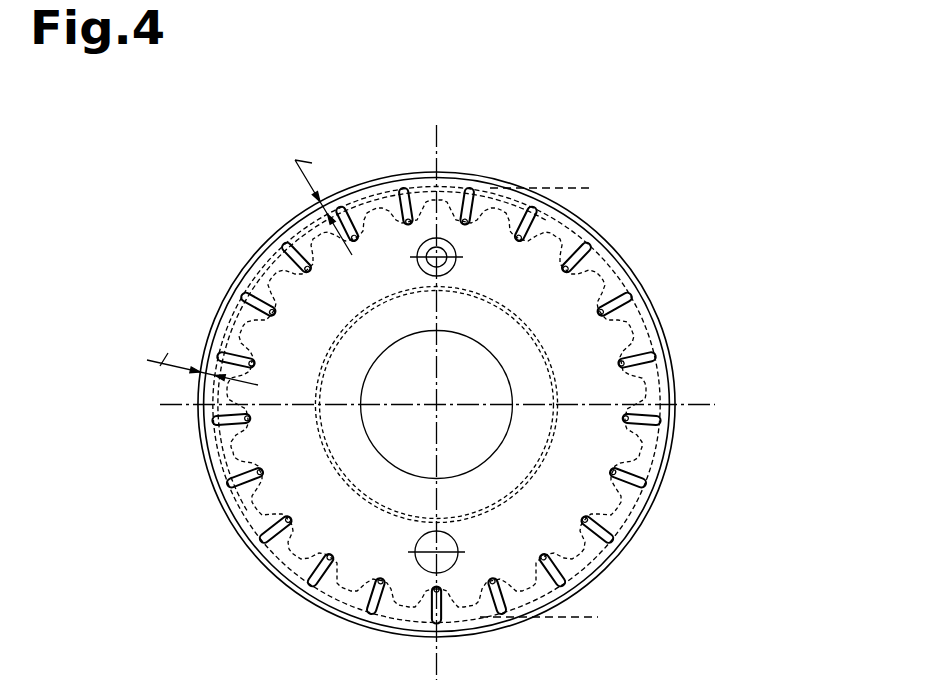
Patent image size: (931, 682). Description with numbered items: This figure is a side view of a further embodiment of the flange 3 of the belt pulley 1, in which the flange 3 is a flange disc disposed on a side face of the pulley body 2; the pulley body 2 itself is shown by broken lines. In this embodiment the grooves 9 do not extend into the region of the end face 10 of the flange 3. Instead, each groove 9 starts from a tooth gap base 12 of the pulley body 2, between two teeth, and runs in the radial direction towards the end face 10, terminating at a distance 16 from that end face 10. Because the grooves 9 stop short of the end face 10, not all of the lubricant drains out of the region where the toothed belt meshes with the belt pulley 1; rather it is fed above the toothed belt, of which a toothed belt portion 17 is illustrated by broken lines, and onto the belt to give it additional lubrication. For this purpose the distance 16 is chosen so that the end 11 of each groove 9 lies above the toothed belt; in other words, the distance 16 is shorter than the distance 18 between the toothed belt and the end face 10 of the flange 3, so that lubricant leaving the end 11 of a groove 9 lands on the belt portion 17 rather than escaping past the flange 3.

The belt pulley 1 is at (738, 183).
The pulley body 2 is at (612, 272).
The flange 3 is at (680, 347).
The grooves 9 is at (213, 480).
The end face 10 is at (225, 518).
The end 11 is at (275, 232).
The tooth gap base 12 is at (634, 467).
The distance 16 is at (160, 365).
The toothed belt portion 17 is at (577, 175).
The distance 18 is at (301, 160).